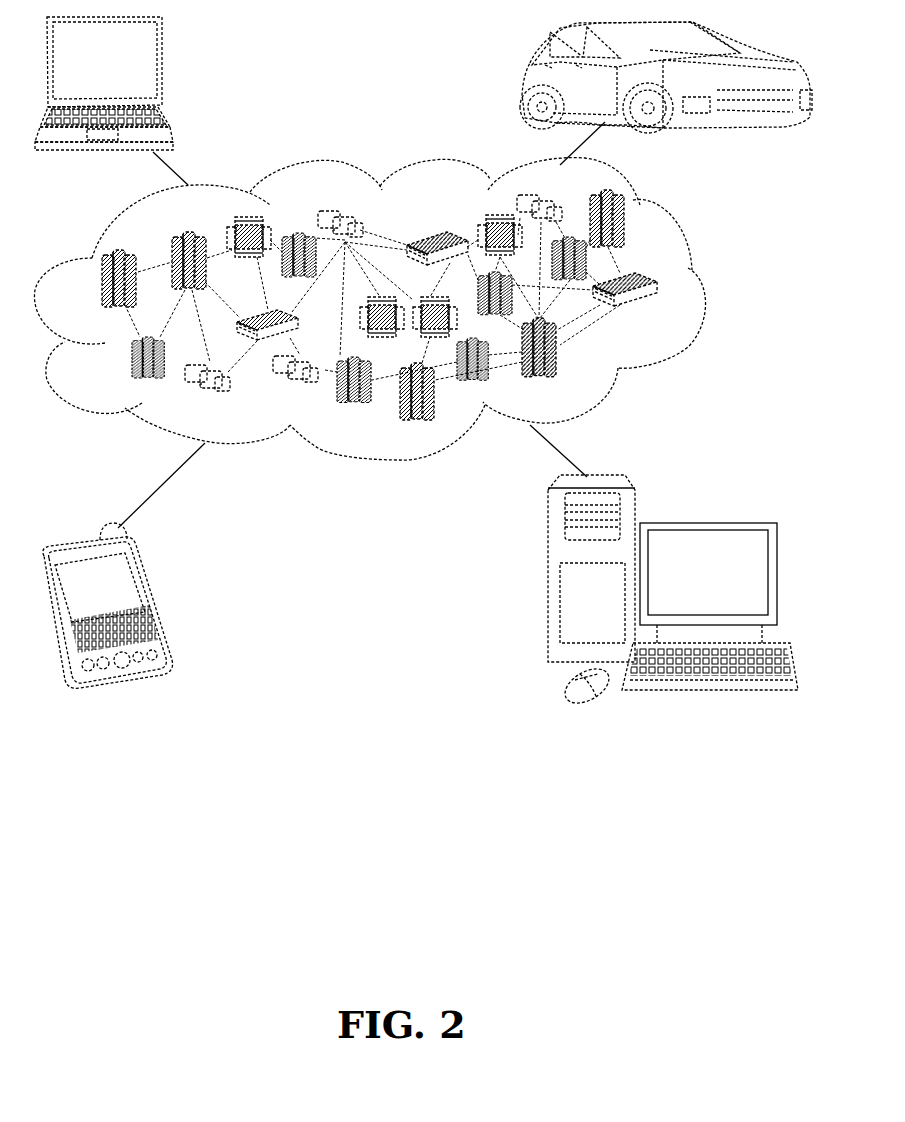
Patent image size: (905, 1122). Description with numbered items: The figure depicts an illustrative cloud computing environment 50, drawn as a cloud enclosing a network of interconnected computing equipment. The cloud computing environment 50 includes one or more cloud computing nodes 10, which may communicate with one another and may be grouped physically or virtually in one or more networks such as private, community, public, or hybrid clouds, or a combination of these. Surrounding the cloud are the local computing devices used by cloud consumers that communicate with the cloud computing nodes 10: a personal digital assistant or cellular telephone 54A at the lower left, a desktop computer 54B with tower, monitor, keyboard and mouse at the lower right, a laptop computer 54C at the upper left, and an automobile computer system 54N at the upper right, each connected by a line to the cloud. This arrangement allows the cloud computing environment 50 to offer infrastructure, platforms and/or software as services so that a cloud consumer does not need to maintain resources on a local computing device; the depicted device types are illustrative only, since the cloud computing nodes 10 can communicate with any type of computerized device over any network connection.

The laptop computer 54C is at (162, 65).
The automobile computer system 54N is at (522, 80).
The cloud computing environment 50 is at (707, 290).
The cloud computing node 10 is at (658, 313).
The personal digital assistant or cellular telephone 54A is at (150, 598).
The desktop computer 54B is at (705, 522).